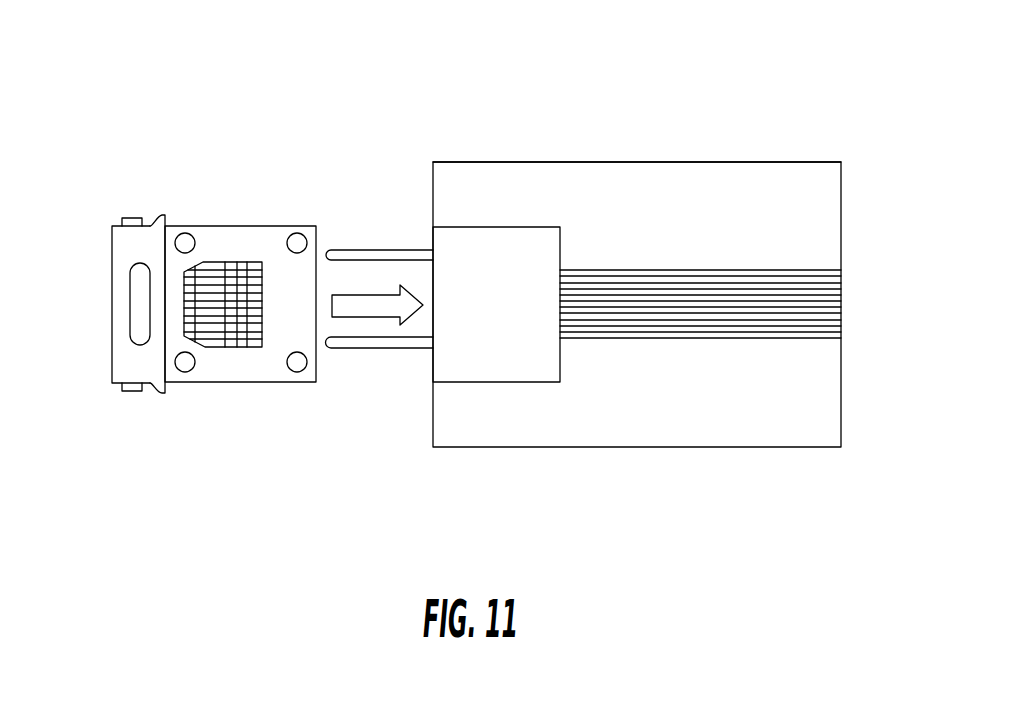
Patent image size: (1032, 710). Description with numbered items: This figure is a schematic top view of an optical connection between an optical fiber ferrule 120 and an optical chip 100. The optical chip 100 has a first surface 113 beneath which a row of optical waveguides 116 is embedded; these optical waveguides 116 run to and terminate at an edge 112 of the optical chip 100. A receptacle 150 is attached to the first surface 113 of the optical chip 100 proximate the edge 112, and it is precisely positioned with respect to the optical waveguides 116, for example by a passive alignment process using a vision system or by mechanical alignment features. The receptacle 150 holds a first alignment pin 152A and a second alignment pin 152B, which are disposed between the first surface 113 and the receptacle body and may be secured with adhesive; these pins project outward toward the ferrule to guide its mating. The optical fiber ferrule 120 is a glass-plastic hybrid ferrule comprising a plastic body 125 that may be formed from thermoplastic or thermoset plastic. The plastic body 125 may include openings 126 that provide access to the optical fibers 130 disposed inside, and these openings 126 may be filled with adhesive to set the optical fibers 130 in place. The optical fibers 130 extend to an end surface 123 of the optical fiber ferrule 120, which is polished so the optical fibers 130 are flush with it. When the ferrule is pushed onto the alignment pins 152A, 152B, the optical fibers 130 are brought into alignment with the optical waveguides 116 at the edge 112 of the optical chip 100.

The optical chip 100 is at (573, 155).
The edge 112 is at (433, 437).
The first surface 113 is at (632, 172).
The optical waveguides 116 is at (813, 362).
The optical fiber ferrule 120 is at (103, 171).
The end surface 123 is at (316, 373).
The plastic body 125 is at (203, 226).
The openings 126 is at (223, 262).
The optical fibers 130 is at (239, 270).
The receptacle 150 is at (568, 245).
The first alignment pin 152A is at (417, 370).
The second alignment pin 152B is at (419, 243).